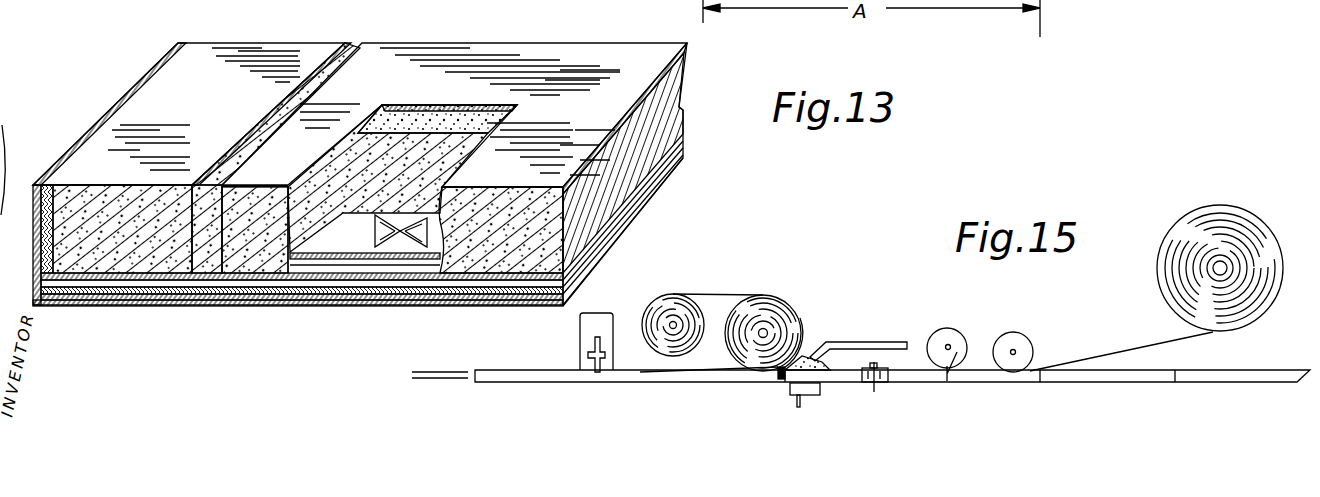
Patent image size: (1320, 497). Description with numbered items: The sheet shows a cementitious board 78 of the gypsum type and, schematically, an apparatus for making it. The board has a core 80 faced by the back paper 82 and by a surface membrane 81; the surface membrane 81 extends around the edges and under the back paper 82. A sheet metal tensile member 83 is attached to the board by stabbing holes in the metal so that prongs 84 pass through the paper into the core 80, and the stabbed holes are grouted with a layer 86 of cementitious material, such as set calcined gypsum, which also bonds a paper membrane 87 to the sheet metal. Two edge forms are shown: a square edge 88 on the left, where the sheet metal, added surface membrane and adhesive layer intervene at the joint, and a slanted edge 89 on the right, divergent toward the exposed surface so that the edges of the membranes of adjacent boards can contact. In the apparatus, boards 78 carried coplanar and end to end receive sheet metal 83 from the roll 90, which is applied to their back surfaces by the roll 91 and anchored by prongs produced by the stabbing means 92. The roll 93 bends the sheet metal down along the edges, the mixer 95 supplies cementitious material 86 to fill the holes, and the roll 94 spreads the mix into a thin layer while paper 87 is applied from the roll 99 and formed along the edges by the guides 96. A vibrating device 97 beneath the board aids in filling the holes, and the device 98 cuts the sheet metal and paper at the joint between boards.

In FIG. 13, the cementitious board 78 is at (291, 17).
In FIG. 15, the cementitious board 78 is at (1099, 375).
In FIG. 13, the core 80 is at (123, 200).
In FIG. 13, the surface membrane 81 is at (483, 60).
In FIG. 13, the back paper 82 is at (113, 284).
In FIG. 13, the sheet metal tensile member 83 is at (167, 299).
In FIG. 15, the sheet metal tensile member 83 is at (1122, 352).
In FIG. 13, the prongs 84 is at (420, 237).
In FIG. 13, the cementitious material layer 86 is at (141, 294).
In FIG. 15, the cementitious material layer 86 is at (804, 360).
In FIG. 13, the membrane 87 is at (257, 308).
In FIG. 15, the membrane 87 is at (728, 297).
In FIG. 13, the square edge 88 is at (29, 203).
In FIG. 13, the slanted edge 89 is at (695, 143).
In FIG. 15, the roll of sheet metal 90 is at (1243, 229).
In FIG. 15, the roll 91 is at (1022, 340).
In FIG. 15, the stabbing means 92 is at (955, 338).
In FIG. 15, the roll 93 is at (888, 383).
In FIG. 15, the roll 94 is at (783, 312).
In FIG. 15, the mixer 95 is at (878, 342).
In FIG. 15, the guides 96 is at (748, 377).
In FIG. 15, the vibrating device 97 is at (790, 393).
In FIG. 15, the cutting device 98 is at (594, 373).
In FIG. 15, the roll of paper 99 is at (680, 303).